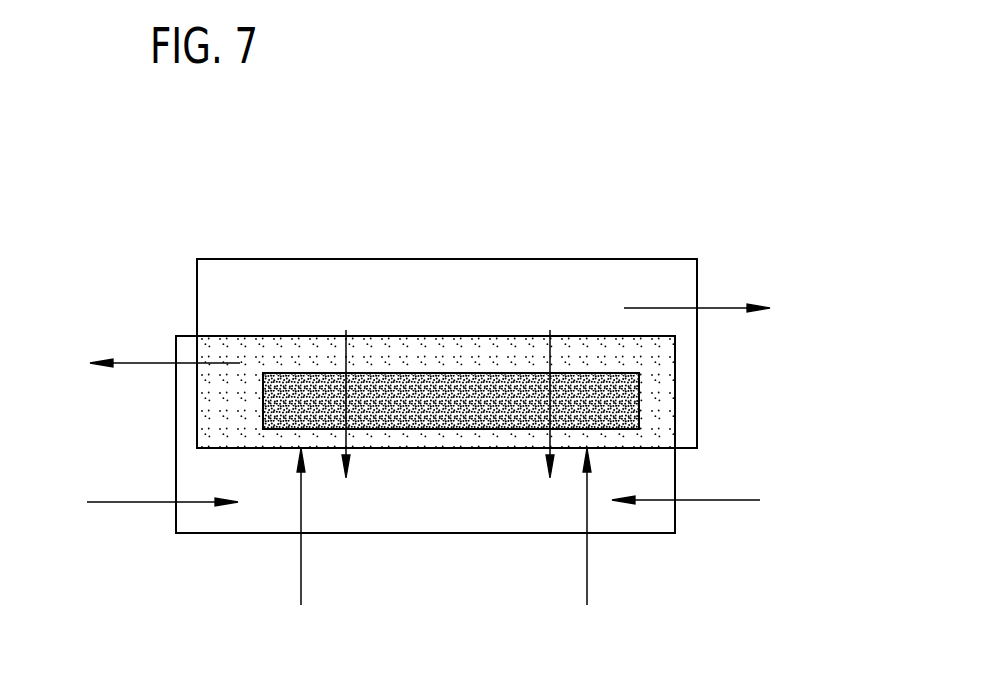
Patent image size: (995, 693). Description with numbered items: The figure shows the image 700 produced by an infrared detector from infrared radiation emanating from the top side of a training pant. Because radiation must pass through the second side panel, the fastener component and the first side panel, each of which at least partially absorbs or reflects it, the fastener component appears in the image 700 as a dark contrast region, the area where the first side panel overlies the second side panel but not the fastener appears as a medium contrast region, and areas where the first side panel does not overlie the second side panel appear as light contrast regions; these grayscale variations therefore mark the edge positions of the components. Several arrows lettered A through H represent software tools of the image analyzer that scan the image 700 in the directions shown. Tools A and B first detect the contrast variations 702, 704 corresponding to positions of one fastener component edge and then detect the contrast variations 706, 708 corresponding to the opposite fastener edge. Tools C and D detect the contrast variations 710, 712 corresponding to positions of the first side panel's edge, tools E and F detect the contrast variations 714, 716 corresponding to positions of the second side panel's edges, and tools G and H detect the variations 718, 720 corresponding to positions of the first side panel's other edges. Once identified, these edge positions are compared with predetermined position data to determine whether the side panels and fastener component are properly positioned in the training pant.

The image 700 is at (143, 236).
The contrast variation 702 is at (335, 373).
The contrast variation 704 is at (540, 373).
The contrast variation 706 is at (335, 429).
The contrast variation 708 is at (560, 429).
The contrast variation 710 is at (309, 448).
The contrast variation 712 is at (580, 448).
The contrast variation 714 is at (175, 507).
The contrast variation 716 is at (674, 505).
The variation 718 is at (176, 354).
The variation 720 is at (698, 297).